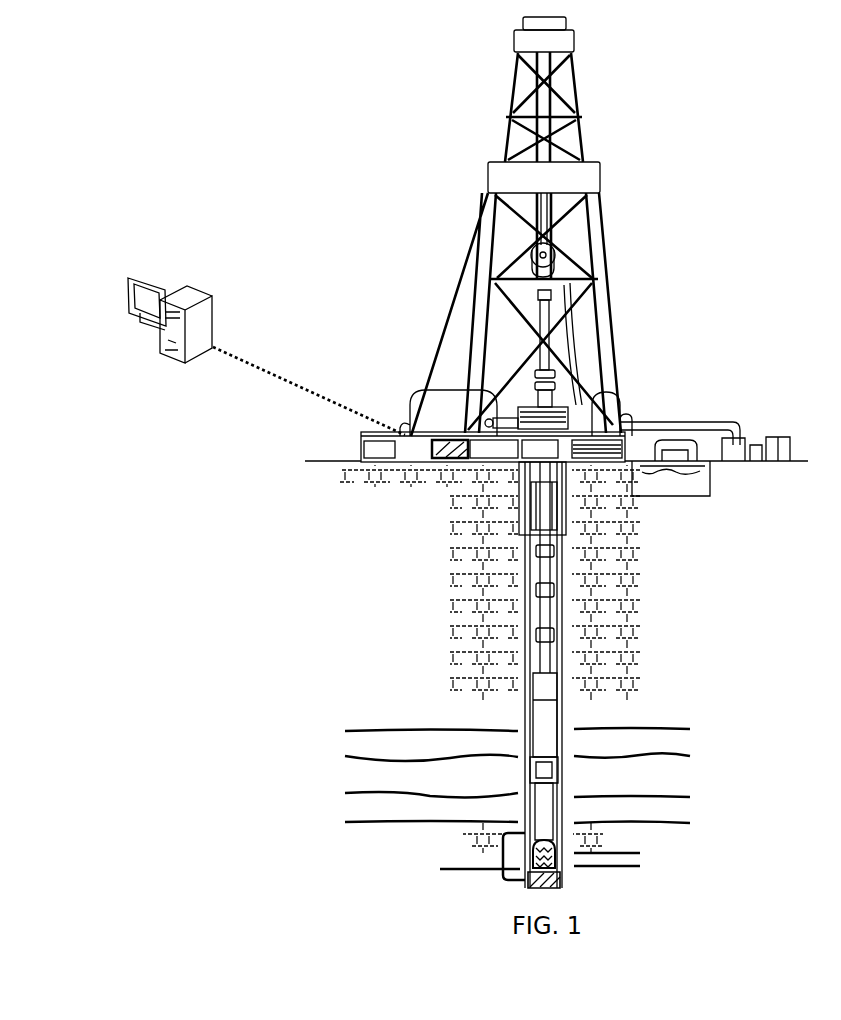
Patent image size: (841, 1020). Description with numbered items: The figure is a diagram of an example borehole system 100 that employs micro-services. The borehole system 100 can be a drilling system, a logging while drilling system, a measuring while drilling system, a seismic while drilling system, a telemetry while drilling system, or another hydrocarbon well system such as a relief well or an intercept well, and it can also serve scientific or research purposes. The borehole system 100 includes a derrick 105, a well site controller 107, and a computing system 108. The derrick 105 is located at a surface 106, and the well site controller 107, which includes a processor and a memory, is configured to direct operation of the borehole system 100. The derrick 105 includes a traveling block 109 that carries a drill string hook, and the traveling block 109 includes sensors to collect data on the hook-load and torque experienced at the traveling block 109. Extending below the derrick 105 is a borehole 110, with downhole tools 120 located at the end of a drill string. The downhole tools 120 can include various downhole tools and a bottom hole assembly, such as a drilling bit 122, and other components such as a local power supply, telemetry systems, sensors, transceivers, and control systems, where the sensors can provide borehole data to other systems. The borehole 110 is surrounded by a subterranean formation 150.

The borehole system 100 is at (264, 75).
The derrick 105 is at (594, 222).
The surface 106 is at (360, 461).
The well site controller 107 is at (432, 447).
The computing system 108 is at (133, 282).
The traveling block 109 is at (556, 264).
The borehole 110 is at (577, 585).
The downhole tools 120 is at (503, 856).
The drilling bit 122 is at (530, 892).
The subterranean formation 150 is at (642, 831).